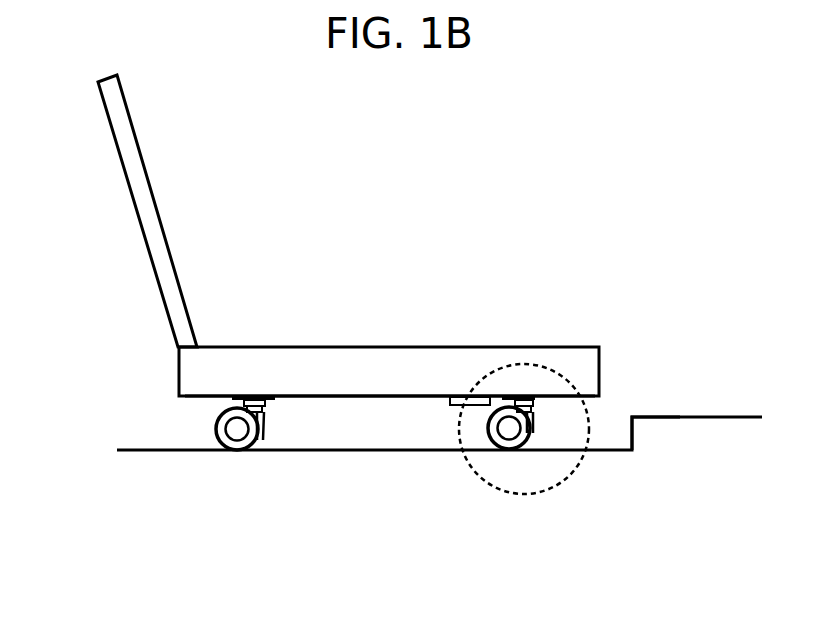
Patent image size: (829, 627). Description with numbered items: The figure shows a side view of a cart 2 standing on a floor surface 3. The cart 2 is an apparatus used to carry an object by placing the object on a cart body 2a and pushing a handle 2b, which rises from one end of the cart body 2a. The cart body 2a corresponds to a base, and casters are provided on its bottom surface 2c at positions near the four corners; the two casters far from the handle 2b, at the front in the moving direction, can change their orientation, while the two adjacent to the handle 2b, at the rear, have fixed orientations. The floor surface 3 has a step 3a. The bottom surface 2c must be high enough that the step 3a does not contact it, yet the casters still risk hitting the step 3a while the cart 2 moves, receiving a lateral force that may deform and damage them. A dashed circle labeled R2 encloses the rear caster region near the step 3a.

The cart 2 is at (505, 255).
The cart body 2a is at (460, 347).
The handle 2b is at (138, 188).
The bottom surface 2c is at (407, 397).
The floor surface 3 is at (188, 450).
The step 3a is at (625, 425).
The region around rear caster R2 is at (585, 457).